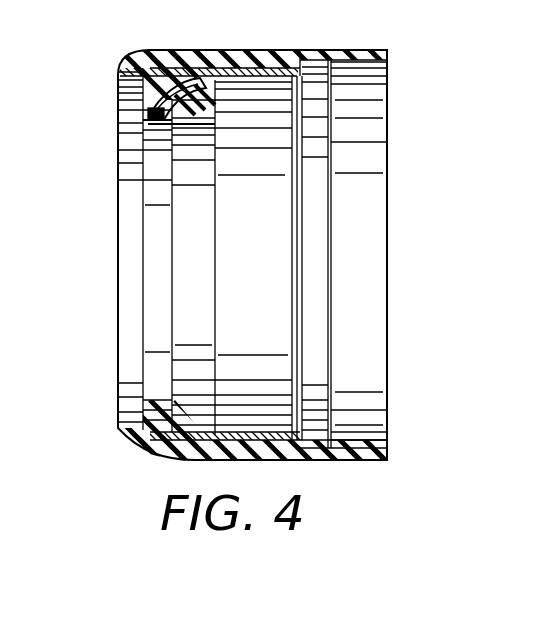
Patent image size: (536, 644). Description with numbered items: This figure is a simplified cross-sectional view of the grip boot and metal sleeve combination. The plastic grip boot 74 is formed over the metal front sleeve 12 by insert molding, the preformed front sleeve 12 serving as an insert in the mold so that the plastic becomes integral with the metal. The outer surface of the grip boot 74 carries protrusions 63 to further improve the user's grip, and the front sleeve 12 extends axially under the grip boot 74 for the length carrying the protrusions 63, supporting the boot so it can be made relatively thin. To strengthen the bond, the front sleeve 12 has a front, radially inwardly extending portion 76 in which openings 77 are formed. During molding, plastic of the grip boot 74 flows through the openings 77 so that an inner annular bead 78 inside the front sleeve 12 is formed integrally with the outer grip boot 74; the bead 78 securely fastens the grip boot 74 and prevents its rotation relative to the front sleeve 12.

The protrusions 63 is at (275, 52).
The grip boot 74 is at (160, 62).
The openings 77 is at (202, 76).
The inner annular bead 78 is at (155, 114).
The front, radially inwardly extending portion 76 is at (148, 142).
The front sleeve 12 is at (246, 428).